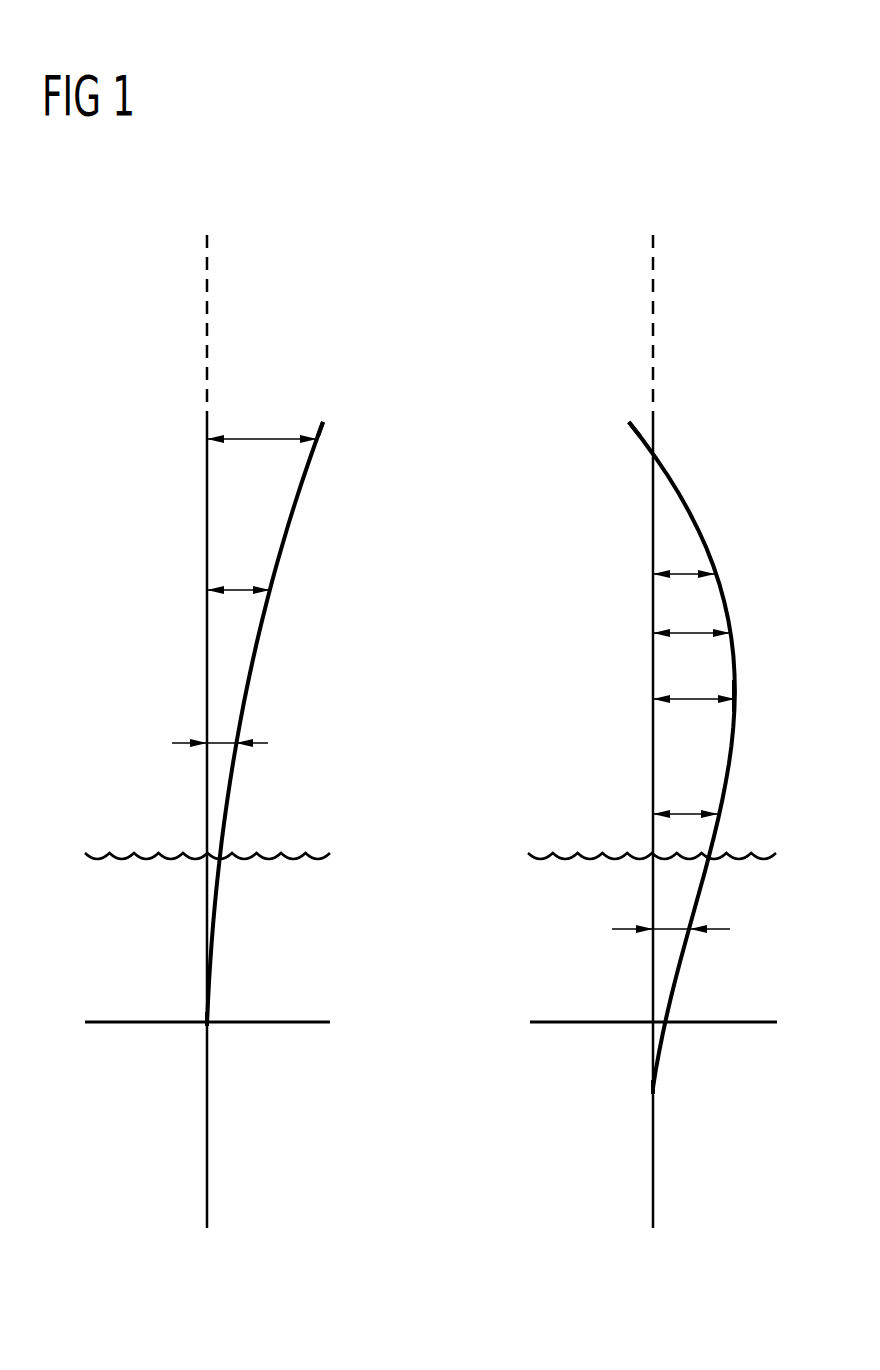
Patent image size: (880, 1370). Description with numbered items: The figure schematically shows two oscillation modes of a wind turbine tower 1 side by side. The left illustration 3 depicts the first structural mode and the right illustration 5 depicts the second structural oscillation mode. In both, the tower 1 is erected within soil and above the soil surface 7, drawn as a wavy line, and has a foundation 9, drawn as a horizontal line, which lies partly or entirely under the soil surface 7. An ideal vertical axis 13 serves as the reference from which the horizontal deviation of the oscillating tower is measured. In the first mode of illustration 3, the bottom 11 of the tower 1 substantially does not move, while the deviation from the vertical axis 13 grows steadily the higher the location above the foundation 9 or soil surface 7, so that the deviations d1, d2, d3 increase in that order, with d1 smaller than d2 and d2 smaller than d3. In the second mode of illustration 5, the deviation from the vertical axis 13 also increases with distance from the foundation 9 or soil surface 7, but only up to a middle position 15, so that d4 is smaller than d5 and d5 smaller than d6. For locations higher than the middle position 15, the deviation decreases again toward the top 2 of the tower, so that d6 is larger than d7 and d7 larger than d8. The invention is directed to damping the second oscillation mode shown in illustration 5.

The wind turbine tower 1 is at (313, 470).
The top of the wind turbine tower 2 is at (324, 431).
The illustration 3 is at (92, 244).
The illustration 5 is at (538, 244).
The soil surface 7 is at (122, 855).
The foundation 9 is at (125, 1020).
The bottom of the tower 11 is at (210, 1019).
The ideal vertical axis 13 is at (207, 308).
The middle position 15 is at (650, 693).
The deviation d1 is at (216, 742).
The deviation d2 is at (238, 590).
The deviation d3 is at (262, 437).
The deviation d4 is at (665, 927).
The deviation d5 is at (688, 812).
The deviation d6 is at (692, 704).
The deviation d7 is at (695, 630).
The deviation d8 is at (688, 571).